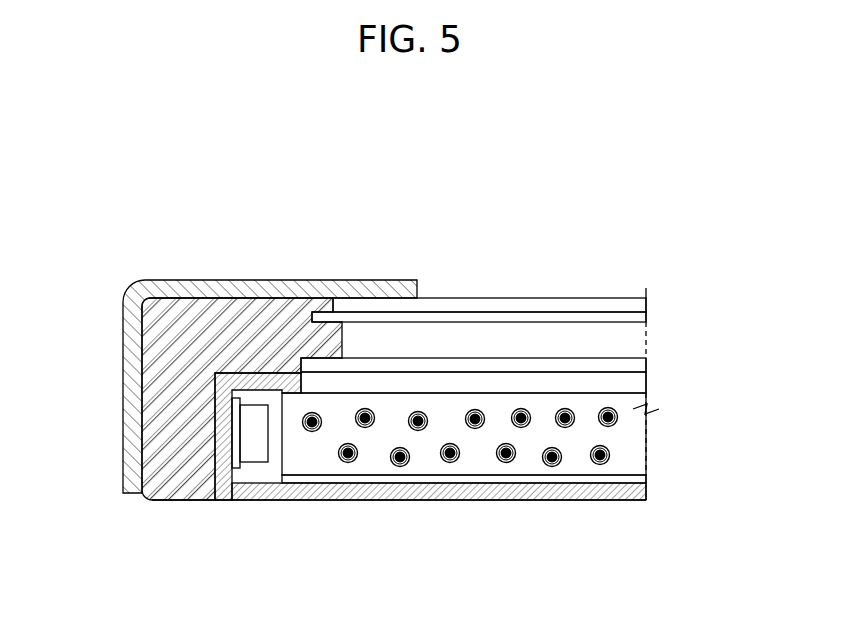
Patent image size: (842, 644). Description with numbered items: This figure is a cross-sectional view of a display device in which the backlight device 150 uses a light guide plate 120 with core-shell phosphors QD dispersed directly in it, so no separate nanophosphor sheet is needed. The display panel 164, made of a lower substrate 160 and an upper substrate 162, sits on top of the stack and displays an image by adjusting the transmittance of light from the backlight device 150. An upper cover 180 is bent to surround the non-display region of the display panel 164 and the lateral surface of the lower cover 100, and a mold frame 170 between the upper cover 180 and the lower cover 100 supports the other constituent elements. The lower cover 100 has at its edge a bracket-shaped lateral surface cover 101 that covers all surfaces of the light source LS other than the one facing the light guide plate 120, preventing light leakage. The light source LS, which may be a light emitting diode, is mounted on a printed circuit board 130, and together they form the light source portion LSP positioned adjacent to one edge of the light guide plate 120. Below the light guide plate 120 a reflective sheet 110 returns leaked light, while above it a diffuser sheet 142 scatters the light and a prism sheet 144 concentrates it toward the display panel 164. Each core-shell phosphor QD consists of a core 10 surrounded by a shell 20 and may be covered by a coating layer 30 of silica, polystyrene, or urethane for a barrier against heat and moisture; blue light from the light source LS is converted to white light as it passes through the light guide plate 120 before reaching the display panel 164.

The lower cover 100 is at (637, 492).
The lateral surface cover 101 is at (225, 437).
The reflective sheet 110 is at (637, 478).
The light guide plate 120 is at (496, 506).
The printed circuit board 130 is at (238, 468).
The light source LS is at (255, 452).
The light source portion LSP is at (251, 508).
The diffuser sheet 142 is at (636, 383).
The prism sheet 144 is at (505, 358).
The backlight device 150 is at (498, 481).
The lower substrate 160 is at (566, 318).
The upper substrate 162 is at (583, 232).
The display panel 164 is at (479, 258).
The mold frame 170 is at (173, 387).
The upper cover 180 is at (132, 345).
The core 10 is at (450, 456).
The shell 20 is at (441, 461).
The coating layer 30 is at (461, 459).
The core-shell phosphor QD is at (455, 532).